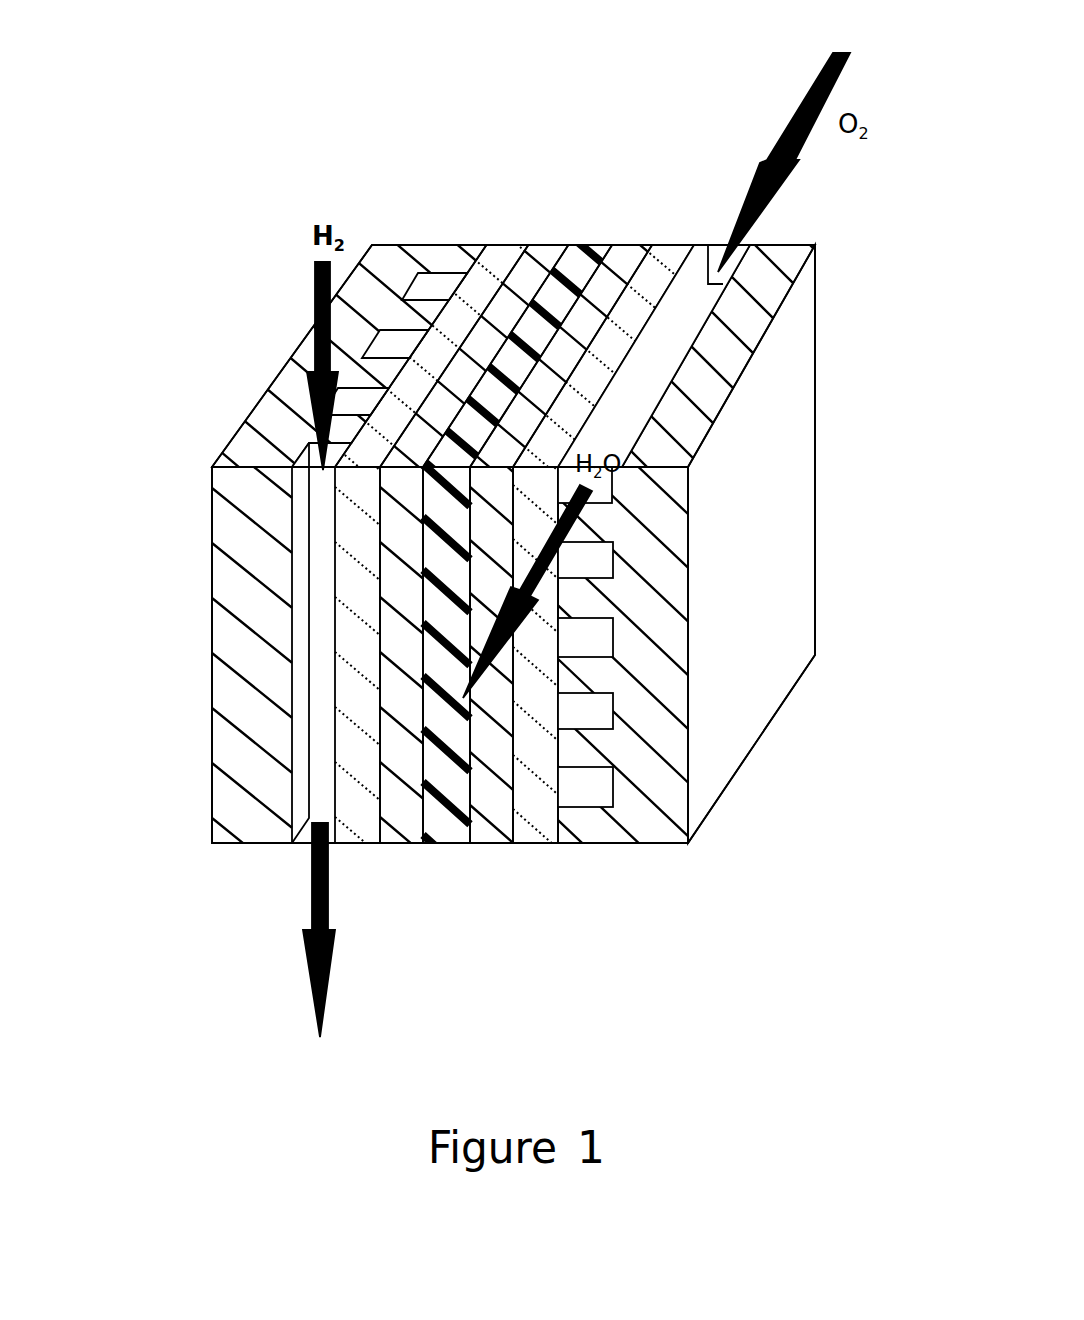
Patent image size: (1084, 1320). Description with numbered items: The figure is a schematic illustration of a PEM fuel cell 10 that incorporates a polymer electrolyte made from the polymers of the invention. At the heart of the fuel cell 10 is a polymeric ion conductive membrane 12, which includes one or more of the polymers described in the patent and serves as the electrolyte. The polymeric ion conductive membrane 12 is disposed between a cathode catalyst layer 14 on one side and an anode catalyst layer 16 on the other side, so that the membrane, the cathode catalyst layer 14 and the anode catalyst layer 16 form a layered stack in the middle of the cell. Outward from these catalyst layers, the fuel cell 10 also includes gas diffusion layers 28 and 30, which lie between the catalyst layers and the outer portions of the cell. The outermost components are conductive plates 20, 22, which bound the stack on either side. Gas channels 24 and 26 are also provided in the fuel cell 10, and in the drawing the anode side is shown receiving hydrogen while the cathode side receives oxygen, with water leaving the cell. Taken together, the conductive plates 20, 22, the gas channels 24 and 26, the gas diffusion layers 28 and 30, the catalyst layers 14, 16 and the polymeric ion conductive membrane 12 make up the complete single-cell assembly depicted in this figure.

The PEM fuel cell 10 is at (270, 197).
The polymeric ion conductive membrane 12 is at (593, 252).
The cathode catalyst layer 14 is at (627, 262).
The anode catalyst layer 16 is at (547, 260).
The conductive plate 20 is at (797, 368).
The conductive plate 22 is at (262, 452).
The gas channel 24 is at (427, 283).
The gas channel 26 is at (577, 713).
The gas diffusion layer 28 is at (500, 263).
The gas diffusion layer 30 is at (680, 270).